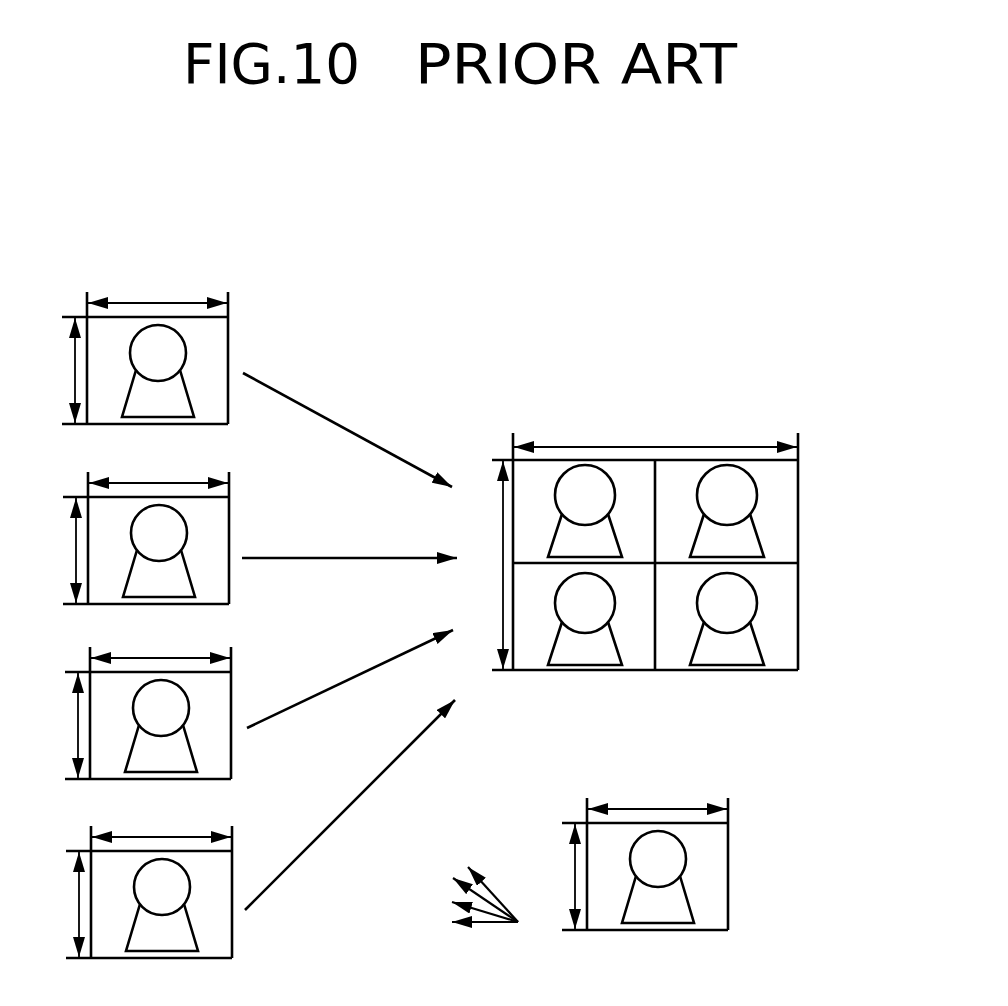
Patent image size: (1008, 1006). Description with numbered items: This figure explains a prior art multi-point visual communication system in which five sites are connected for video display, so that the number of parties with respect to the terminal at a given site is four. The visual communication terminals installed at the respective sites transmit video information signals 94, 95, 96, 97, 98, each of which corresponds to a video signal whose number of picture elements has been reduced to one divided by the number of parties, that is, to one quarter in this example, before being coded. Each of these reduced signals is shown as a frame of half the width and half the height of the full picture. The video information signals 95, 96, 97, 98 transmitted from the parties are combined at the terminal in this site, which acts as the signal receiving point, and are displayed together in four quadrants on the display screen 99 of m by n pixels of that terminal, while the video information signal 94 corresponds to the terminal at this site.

The video information signal 94 is at (728, 853).
The video information signal 95 is at (228, 352).
The video information signal 96 is at (229, 532).
The video information signal 97 is at (231, 707).
The video information signal 98 is at (232, 886).
The display screen 99 is at (798, 505).